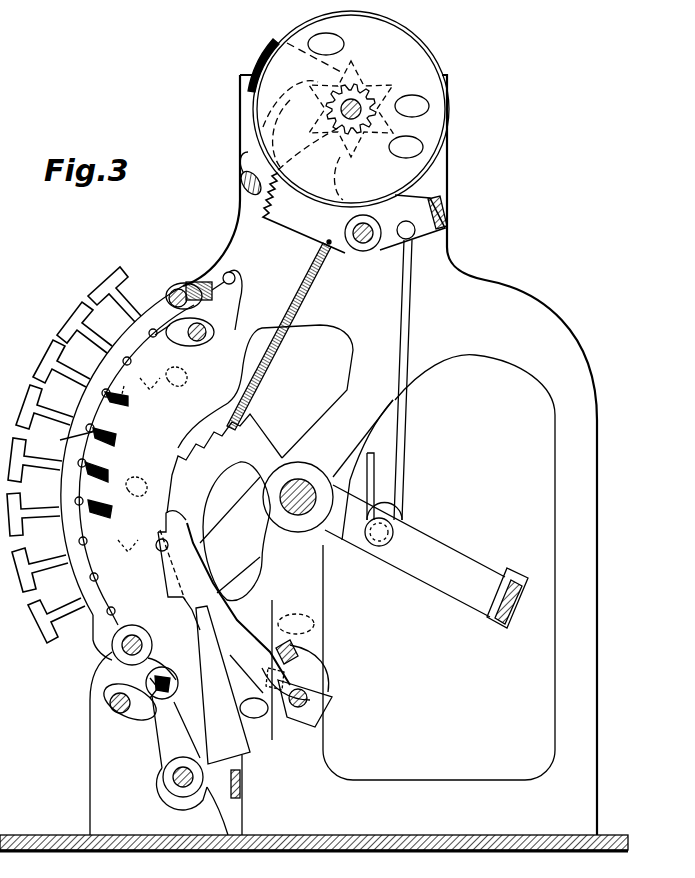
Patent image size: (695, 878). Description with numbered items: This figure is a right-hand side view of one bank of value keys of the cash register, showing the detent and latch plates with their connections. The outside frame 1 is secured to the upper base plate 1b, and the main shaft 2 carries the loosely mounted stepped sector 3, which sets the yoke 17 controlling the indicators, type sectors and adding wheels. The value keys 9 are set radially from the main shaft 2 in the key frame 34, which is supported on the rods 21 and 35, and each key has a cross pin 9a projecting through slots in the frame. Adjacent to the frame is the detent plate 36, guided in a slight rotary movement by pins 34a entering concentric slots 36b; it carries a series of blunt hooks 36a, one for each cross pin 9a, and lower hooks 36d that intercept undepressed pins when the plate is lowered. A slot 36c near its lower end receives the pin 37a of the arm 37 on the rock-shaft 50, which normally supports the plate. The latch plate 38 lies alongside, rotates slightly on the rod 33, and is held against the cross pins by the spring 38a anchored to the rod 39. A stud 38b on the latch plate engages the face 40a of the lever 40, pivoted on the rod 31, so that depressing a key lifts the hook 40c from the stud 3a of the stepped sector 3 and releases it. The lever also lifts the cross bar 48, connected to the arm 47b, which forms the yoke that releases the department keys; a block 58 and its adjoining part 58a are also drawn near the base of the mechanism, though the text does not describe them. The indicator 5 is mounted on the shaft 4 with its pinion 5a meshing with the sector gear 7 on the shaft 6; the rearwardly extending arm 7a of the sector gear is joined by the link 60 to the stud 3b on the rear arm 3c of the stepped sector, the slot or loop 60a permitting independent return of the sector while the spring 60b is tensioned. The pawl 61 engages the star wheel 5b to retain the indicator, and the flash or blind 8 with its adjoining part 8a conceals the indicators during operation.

The outside frame 1 is at (598, 605).
The upper base plate 1b is at (496, 818).
The main shaft 2 is at (305, 485).
The stepped sector 3 is at (255, 442).
The stud 3a is at (254, 707).
The stud 3b is at (396, 528).
The rear arm 3c is at (415, 551).
The shaft 4 is at (372, 106).
The indicator 5 is at (432, 65).
The pinion 5a is at (378, 106).
The star wheel 5b is at (406, 147).
The shaft 6 is at (364, 245).
The sector gear 7 is at (354, 213).
The rearwardly extending arm 7a is at (412, 212).
The flash or blind 8 is at (262, 64).
The brake lever 8a is at (315, 53).
The value key 9 is at (60, 345).
The cross pin 9a is at (96, 430).
The yoke 17 is at (512, 604).
The rod 21 is at (128, 647).
The rod 31 is at (312, 696).
The rod 33 is at (172, 778).
The key frame 34 is at (70, 486).
The pin 34a is at (163, 437).
The rod 35 is at (170, 334).
The detent plate 36 is at (107, 455).
The hook 36a is at (103, 393).
The concentric slot 36b is at (142, 469).
The slot 36c is at (165, 674).
The hook 36d is at (80, 508).
The arm 37 is at (138, 697).
The pin 37a is at (152, 680).
The latch plate 38 is at (160, 742).
The spring 38a is at (198, 282).
The stud 38b is at (170, 546).
The rod 39 is at (174, 290).
The lever 40 is at (229, 685).
The face 40a is at (170, 570).
The hook 40c is at (276, 664).
The arm 47b is at (308, 672).
The cross bar 48 is at (297, 652).
The rock-shaft 50 is at (110, 704).
The stop block 58 is at (242, 787).
The stop arm 58a is at (212, 795).
The link 60 is at (405, 345).
The slot or loop 60a is at (380, 476).
The spring 60b is at (276, 350).
The pawl 61 is at (258, 152).